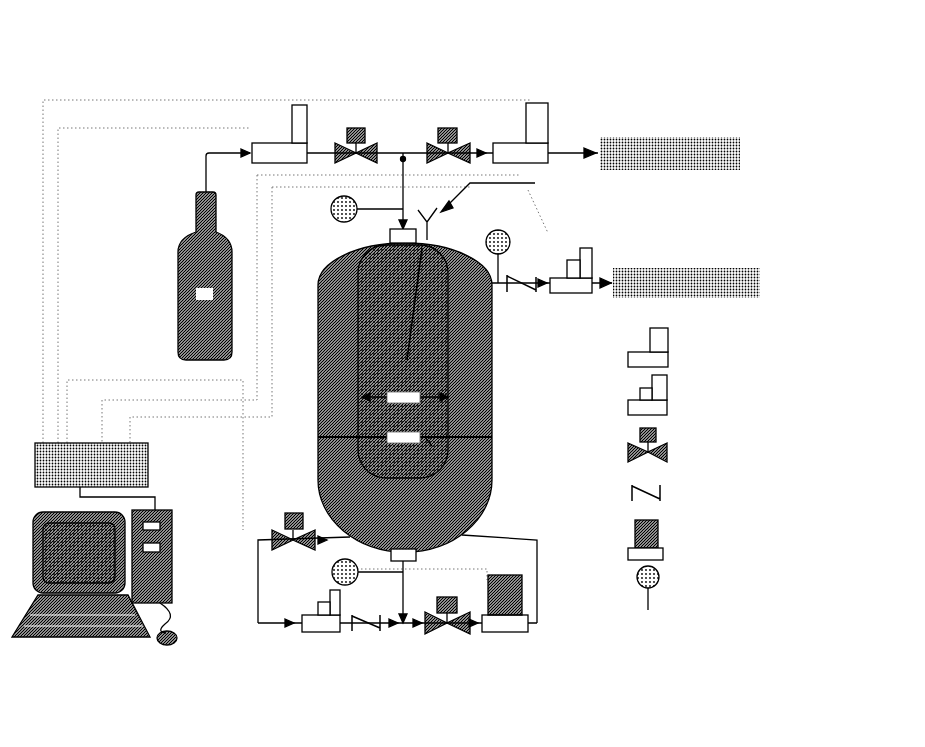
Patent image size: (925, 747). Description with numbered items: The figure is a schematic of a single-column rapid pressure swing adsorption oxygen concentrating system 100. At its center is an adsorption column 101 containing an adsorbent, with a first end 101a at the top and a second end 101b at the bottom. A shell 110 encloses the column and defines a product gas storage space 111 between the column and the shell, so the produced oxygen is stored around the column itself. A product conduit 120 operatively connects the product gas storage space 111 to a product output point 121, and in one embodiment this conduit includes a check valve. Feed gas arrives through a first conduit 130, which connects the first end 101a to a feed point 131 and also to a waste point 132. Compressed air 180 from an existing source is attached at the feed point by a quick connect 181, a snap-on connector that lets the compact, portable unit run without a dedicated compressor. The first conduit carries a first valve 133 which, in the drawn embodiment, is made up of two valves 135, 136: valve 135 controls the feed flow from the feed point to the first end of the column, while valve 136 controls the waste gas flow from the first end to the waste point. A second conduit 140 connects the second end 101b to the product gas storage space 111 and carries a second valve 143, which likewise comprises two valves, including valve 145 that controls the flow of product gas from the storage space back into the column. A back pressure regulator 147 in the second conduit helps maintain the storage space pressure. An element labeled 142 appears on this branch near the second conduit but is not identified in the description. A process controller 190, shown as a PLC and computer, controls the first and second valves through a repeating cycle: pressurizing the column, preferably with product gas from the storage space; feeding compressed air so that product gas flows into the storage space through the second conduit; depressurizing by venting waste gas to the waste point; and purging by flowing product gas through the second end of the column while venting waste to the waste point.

The oxygen concentrating system 100 is at (588, 90).
The adsorption column 101 is at (493, 372).
The first end 101a is at (392, 250).
The second end 101b is at (493, 460).
The shell 110 is at (493, 320).
The product gas storage space 111 is at (318, 384).
The product conduit 120 is at (518, 273).
The product output point 121 is at (711, 285).
The first conduit 130 is at (379, 118).
The feed point 131 is at (250, 152).
The waste point 132 is at (694, 155).
The first valve 133 is at (430, 86).
The valve 135 is at (357, 128).
The valve 136 is at (463, 140).
The second conduit 140 is at (357, 640).
The recirculation valve 142 is at (293, 553).
The second valve 143 is at (456, 638).
The valve 145 is at (447, 615).
The back pressure regulator 147 is at (540, 634).
The compressed air 180 is at (193, 225).
The quick connect 181 is at (251, 163).
The process controller 190 is at (172, 563).